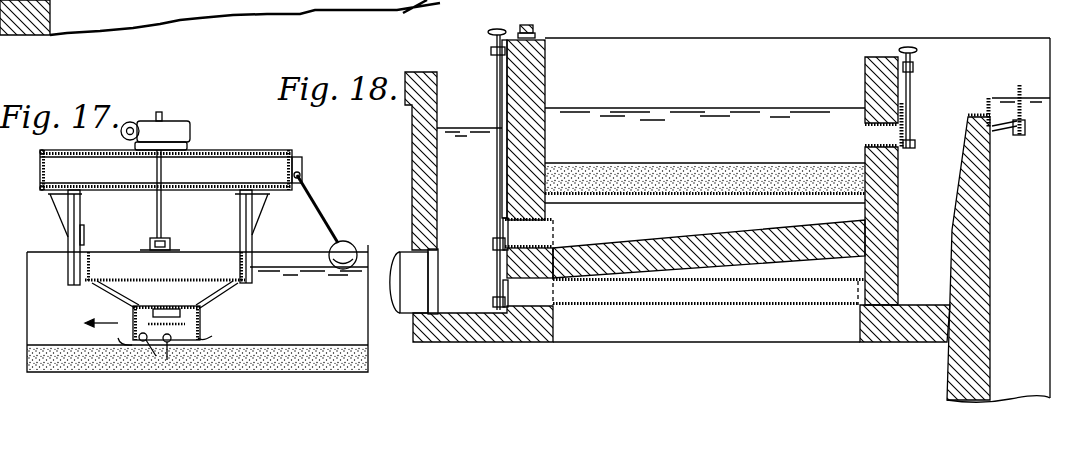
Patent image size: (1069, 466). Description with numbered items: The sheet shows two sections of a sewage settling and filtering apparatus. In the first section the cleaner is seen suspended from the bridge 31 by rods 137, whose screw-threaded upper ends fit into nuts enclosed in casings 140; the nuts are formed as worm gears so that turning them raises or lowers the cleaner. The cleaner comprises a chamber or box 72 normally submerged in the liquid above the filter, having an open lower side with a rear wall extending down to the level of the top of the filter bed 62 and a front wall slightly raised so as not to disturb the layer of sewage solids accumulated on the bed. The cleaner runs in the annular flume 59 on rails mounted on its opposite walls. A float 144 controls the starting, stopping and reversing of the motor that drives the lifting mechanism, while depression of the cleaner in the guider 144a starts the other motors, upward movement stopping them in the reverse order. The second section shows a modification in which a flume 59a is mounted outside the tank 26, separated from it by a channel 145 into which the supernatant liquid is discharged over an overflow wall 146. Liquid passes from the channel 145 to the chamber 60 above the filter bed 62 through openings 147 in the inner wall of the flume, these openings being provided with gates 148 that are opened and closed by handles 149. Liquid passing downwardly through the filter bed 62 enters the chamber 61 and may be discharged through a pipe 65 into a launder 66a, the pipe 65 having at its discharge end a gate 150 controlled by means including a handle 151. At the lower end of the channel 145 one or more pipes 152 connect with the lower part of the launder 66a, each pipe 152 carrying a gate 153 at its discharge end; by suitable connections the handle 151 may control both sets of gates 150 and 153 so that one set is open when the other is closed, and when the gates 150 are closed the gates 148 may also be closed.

In FIG. 18, the tank 26 is at (948, 365).
In FIG. 17, the bridge 31 is at (221, 152).
In FIG. 17, the annular flume 59 is at (369, 247).
In FIG. 18, the flume 59a is at (507, 88).
In FIG. 18, the chamber 60 is at (693, 60).
In FIG. 18, the chamber 61 is at (685, 232).
In FIG. 17, the filter bed 62 is at (262, 346).
In FIG. 18, the filter bed 62 is at (673, 174).
In FIG. 18, the pipe 65 is at (545, 233).
In FIG. 18, the launder 66a is at (453, 160).
In FIG. 17, the chamber or box 72 is at (140, 304).
In FIG. 17, the rods 137 is at (163, 213).
In FIG. 17, the casings 140 is at (177, 122).
In FIG. 17, the float 144 is at (342, 241).
In FIG. 17, the guider 144a is at (70, 237).
In FIG. 18, the channel 145 is at (933, 218).
In FIG. 18, the overflow wall 146 is at (986, 99).
In FIG. 18, the openings 147 is at (877, 137).
In FIG. 18, the gates 148 is at (914, 140).
In FIG. 18, the handles 149 is at (910, 47).
In FIG. 18, the gate 150 is at (500, 233).
In FIG. 18, the handle 151 is at (496, 28).
In FIG. 18, the pipes 152 is at (743, 305).
In FIG. 18, the gate 153 is at (507, 290).